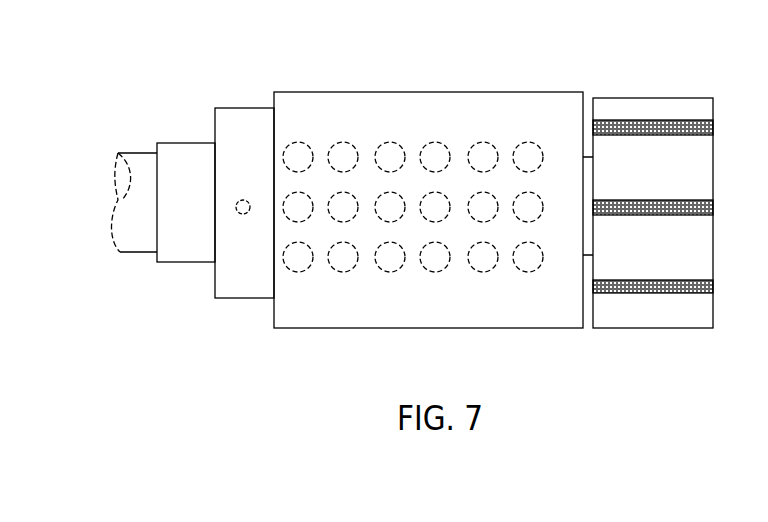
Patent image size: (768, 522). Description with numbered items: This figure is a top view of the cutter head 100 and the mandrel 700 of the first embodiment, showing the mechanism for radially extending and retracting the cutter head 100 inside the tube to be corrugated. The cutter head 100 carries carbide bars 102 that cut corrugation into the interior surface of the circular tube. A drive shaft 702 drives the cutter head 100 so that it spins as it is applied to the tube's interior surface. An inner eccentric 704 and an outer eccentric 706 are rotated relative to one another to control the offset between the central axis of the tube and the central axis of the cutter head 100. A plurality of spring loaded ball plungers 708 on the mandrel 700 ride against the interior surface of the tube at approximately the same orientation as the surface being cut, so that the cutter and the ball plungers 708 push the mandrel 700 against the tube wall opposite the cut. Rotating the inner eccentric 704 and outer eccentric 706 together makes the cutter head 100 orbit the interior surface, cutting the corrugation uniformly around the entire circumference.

The cutter head 100 is at (683, 40).
The carbide bars 102 is at (642, 122).
The mandrel 700 is at (410, 92).
The drive shaft 702 is at (138, 254).
The inner eccentric 704 is at (188, 263).
The outer eccentric 706 is at (252, 299).
The spring loaded ball plungers 708 is at (378, 147).